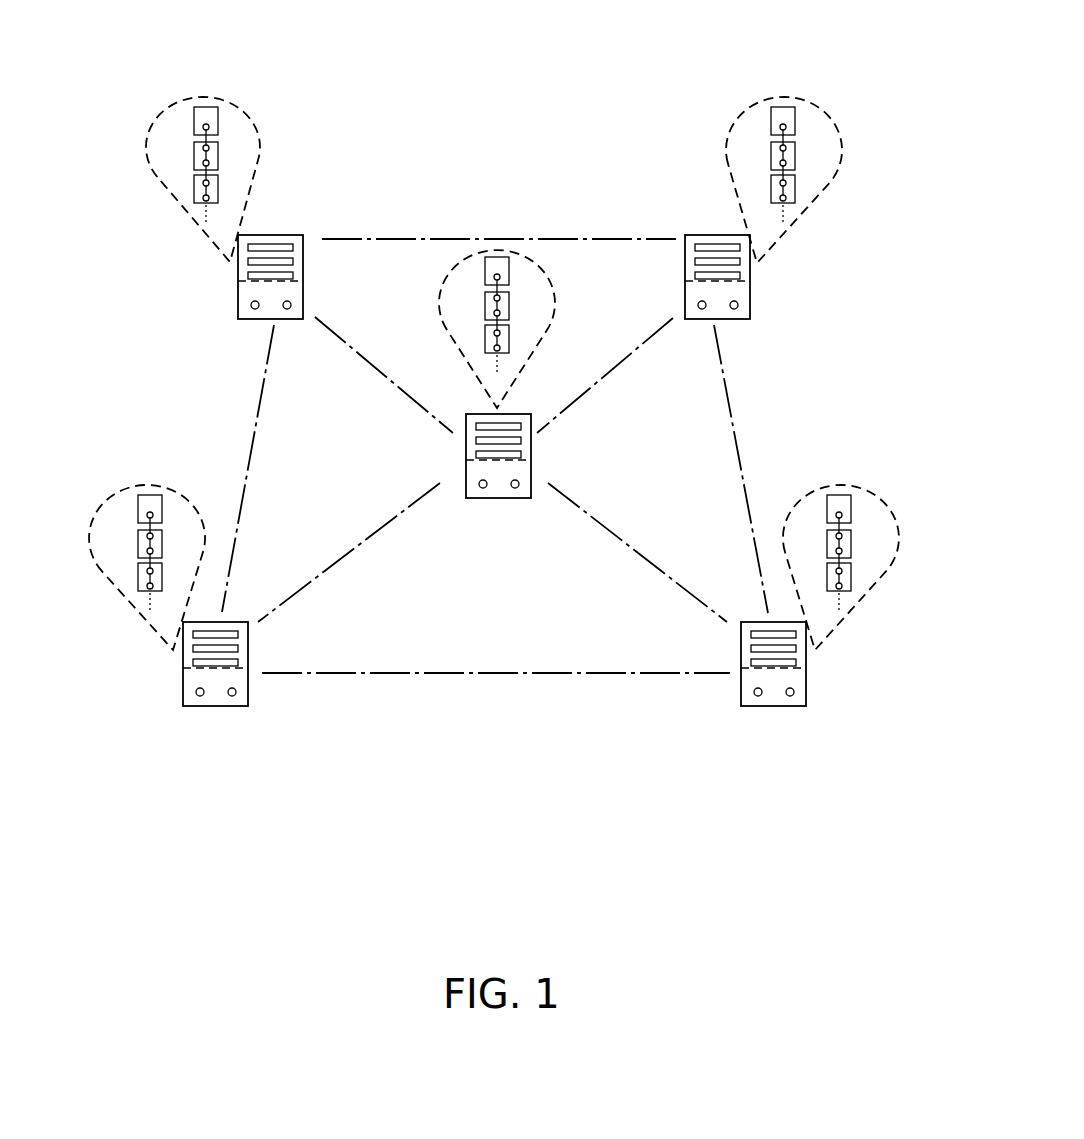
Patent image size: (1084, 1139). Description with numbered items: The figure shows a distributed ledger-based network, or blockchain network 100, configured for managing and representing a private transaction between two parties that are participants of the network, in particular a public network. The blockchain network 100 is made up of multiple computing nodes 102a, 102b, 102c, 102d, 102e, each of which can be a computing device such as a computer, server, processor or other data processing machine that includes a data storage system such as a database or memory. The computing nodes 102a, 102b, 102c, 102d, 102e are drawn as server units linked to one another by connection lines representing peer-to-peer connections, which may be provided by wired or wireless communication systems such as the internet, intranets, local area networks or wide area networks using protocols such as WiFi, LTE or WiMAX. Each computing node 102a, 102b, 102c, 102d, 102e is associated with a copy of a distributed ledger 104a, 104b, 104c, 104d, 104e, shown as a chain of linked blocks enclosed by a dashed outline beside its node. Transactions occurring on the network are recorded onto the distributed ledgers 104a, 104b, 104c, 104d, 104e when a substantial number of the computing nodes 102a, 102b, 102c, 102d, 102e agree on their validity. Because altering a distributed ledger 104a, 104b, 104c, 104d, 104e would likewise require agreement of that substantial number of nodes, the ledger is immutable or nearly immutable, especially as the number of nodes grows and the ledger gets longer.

The blockchain network 100 is at (112, 325).
The computing node 102a is at (248, 648).
The computing node 102b is at (740, 652).
The computing node 102c is at (531, 450).
The computing node 102d is at (273, 235).
The computing node 102e is at (709, 235).
The distributed ledger 104a is at (128, 488).
The distributed ledger 104b is at (898, 540).
The distributed ledger 104c is at (552, 337).
The distributed ledger 104d is at (257, 140).
The distributed ledger 104e is at (838, 118).